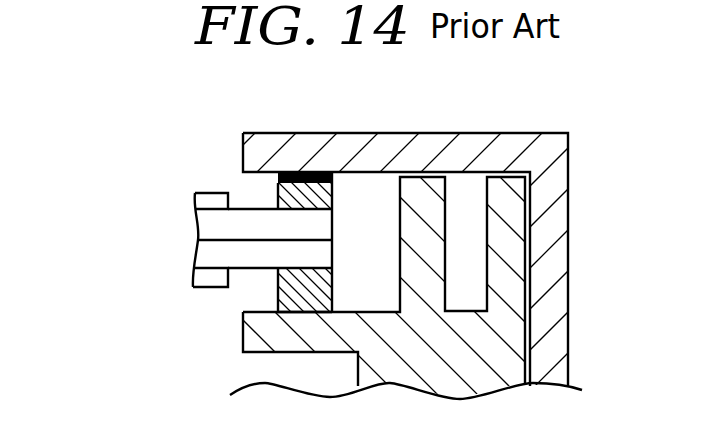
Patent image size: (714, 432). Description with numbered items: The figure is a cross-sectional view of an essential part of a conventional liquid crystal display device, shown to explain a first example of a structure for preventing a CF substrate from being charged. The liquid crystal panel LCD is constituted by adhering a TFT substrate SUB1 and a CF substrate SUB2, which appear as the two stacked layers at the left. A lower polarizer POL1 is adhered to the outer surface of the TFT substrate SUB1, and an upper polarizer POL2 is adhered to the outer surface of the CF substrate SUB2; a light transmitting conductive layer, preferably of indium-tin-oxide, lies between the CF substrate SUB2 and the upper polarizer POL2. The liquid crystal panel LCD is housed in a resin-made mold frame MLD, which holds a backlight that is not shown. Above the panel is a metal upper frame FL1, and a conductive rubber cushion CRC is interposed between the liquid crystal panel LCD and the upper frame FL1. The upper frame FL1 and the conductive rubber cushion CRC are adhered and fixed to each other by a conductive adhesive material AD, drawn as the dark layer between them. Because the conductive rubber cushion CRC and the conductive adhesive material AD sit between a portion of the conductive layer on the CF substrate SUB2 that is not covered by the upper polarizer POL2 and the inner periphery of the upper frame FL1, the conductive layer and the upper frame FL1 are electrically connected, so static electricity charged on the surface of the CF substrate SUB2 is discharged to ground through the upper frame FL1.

The upper frame FL1 is at (563, 215).
The mold frame MLD is at (508, 186).
The conductive rubber cushion CRC is at (298, 172).
The conductive adhesive material AD is at (318, 172).
The liquid crystal panel LCD is at (107, 155).
The upper polarizer POL2 is at (213, 198).
The CF substrate SUB2 is at (207, 227).
The TFT substrate SUB1 is at (203, 253).
The lower polarizer POL1 is at (210, 282).